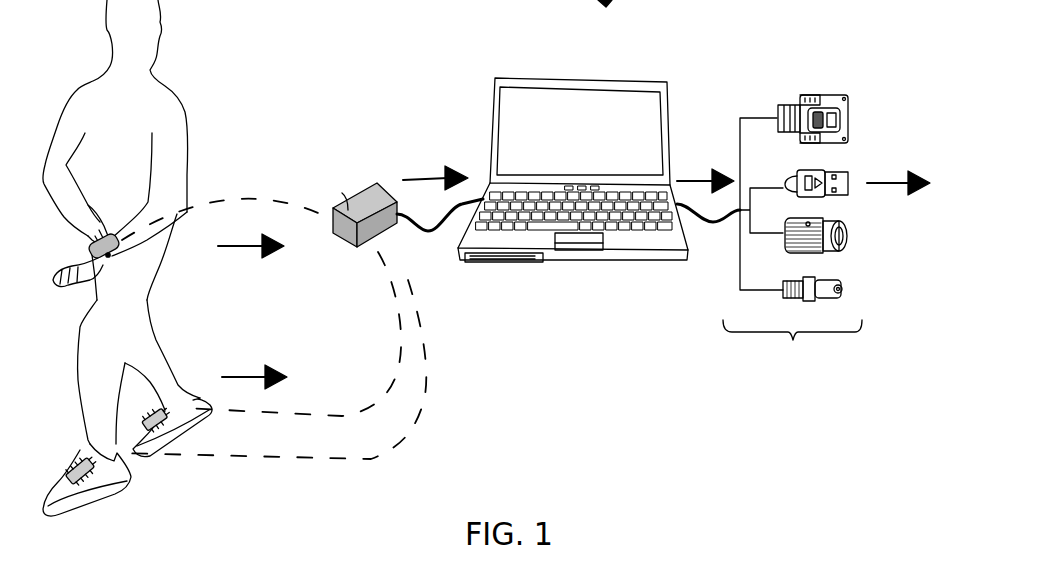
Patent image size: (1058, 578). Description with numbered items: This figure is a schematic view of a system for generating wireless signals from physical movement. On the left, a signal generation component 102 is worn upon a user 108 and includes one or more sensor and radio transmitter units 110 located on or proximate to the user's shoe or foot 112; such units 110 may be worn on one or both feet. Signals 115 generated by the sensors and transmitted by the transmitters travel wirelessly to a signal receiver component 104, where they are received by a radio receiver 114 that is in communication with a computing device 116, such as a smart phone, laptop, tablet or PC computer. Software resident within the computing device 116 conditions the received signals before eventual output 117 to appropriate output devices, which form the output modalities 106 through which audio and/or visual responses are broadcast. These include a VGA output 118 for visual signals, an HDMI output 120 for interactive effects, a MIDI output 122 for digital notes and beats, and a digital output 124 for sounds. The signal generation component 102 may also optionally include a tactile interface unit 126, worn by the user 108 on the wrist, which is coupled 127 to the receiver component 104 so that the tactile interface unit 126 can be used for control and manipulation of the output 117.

The signal generation component 102 is at (147, 300).
The signal receiver component 104 is at (537, 60).
The output modalities 106 is at (793, 340).
The user 108 is at (186, 126).
The sensor and radio transmitter unit 110 is at (67, 467).
The shoe or foot 112 is at (200, 430).
The radio receiver 114 is at (343, 242).
The signals 115 is at (353, 413).
The computing device 116 is at (588, 263).
The output 117 is at (892, 187).
The VGA output 118 is at (838, 98).
The HDMI output 120 is at (843, 173).
The MIDI output 122 is at (847, 239).
The digital output 124 is at (845, 289).
The tactile interface unit 126 is at (98, 240).
The coupling 127 is at (258, 203).